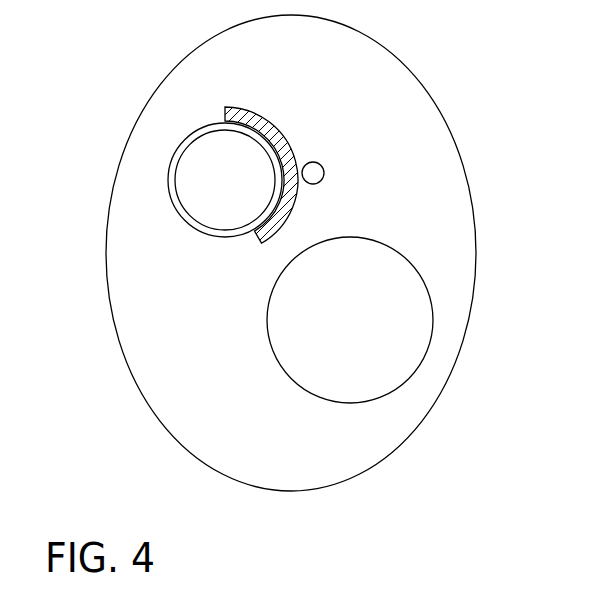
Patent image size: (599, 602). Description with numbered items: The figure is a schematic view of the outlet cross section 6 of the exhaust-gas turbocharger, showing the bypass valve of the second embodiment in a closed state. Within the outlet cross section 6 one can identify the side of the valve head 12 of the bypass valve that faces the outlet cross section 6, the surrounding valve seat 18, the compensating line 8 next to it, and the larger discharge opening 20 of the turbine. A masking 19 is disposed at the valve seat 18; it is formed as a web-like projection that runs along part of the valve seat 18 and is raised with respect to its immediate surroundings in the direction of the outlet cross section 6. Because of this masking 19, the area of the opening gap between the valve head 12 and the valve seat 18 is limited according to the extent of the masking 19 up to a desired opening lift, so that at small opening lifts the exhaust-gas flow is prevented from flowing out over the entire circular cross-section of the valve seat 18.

The outlet cross section 6 is at (228, 425).
The compensating line 8 is at (319, 170).
The valve head 12 is at (210, 192).
The valve seat 18 is at (177, 120).
The masking 19 is at (278, 134).
The discharge opening 20 is at (373, 367).